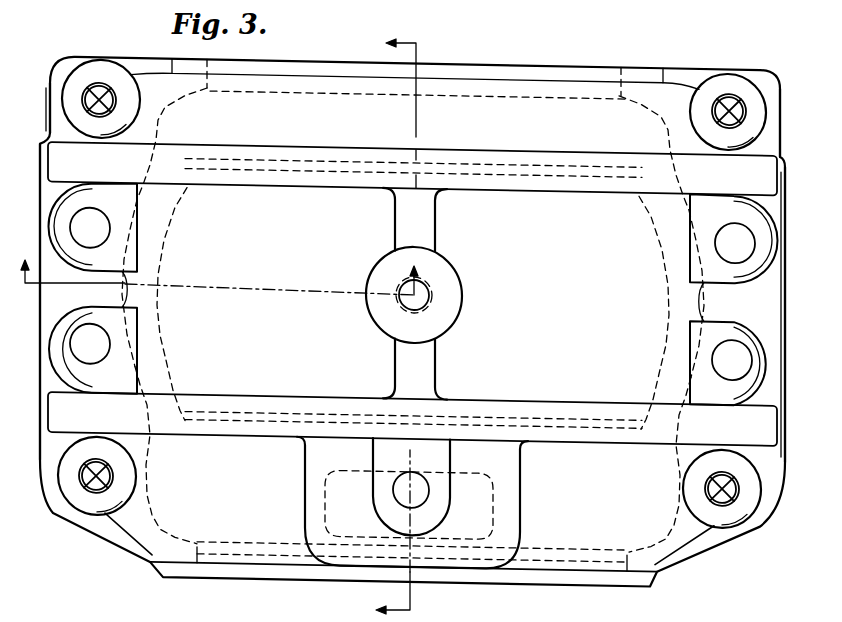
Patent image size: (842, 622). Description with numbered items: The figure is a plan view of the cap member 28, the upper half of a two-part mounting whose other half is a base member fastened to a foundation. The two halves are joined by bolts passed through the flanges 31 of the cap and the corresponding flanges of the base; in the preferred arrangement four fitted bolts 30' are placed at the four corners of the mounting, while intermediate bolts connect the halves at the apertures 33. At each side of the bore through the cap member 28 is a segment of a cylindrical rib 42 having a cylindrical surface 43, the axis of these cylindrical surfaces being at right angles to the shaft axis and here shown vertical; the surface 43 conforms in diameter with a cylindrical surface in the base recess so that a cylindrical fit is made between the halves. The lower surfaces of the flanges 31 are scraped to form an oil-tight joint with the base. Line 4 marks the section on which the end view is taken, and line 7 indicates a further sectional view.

The cap member 28 is at (693, 165).
The fitted bolts 30' is at (421, 285).
The flanges 31 is at (62, 118).
The apertures 33 is at (100, 230).
The cylindrical rib segment 42 is at (157, 205).
The cylindrical surface 43 is at (137, 386).
The section line 4- 4 is at (217, 265).
The section line 7- 7 is at (384, 327).